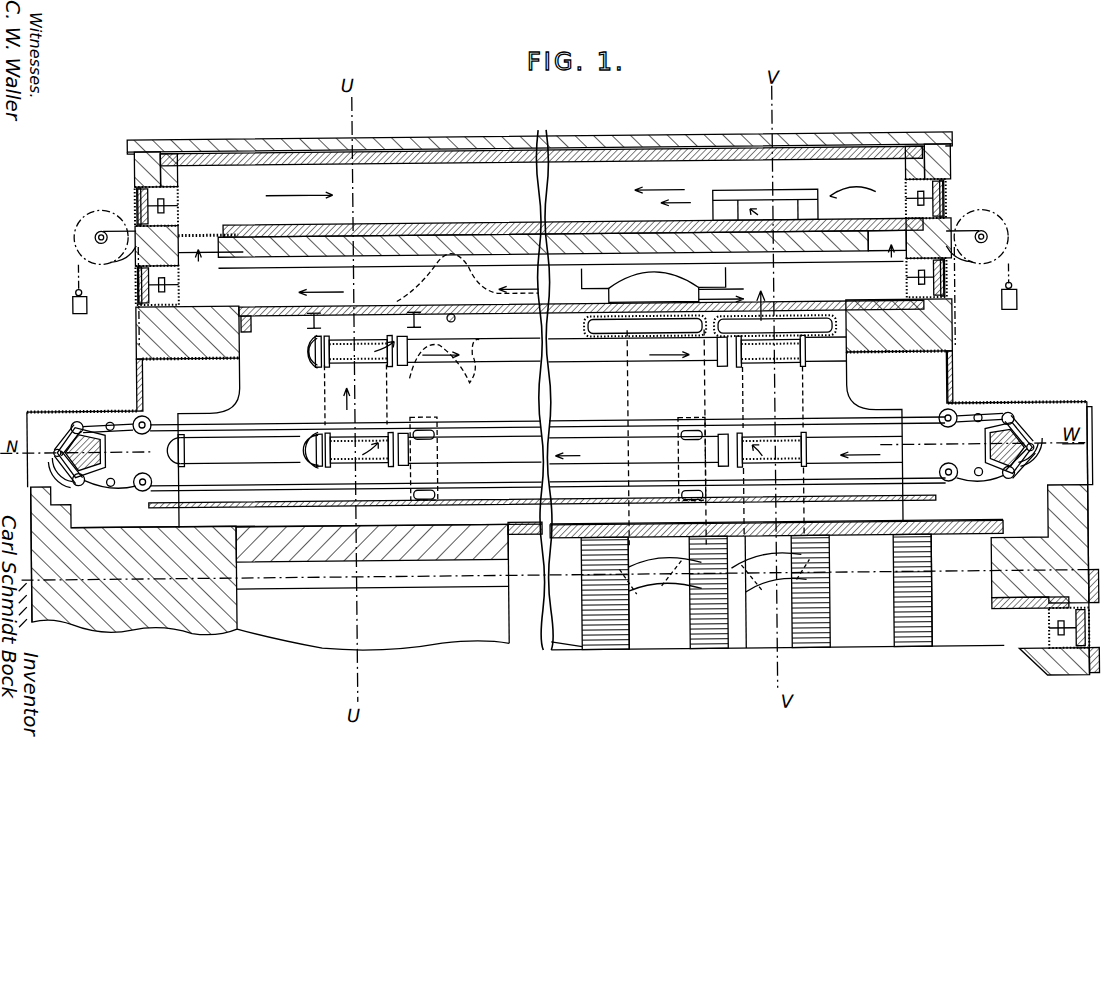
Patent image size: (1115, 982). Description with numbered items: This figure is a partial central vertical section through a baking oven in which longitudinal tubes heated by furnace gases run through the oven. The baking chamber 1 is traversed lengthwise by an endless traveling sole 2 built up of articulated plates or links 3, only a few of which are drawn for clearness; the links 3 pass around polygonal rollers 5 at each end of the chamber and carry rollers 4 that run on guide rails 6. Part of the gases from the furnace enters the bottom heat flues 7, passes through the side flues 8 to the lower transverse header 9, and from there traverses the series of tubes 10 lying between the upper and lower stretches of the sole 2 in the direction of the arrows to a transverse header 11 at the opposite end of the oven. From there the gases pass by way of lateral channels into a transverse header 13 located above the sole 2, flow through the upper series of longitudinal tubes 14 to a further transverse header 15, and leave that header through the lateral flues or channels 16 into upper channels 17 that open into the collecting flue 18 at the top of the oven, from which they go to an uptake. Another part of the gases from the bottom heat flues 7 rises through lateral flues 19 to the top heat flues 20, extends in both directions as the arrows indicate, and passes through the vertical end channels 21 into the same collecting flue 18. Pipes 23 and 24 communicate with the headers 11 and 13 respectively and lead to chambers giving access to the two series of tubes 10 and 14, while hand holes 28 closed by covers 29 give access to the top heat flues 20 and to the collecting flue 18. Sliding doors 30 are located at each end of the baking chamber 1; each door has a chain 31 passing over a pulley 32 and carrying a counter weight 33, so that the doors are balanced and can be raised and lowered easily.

The baking chamber 1 is at (556, 408).
The endless traveling sole 2 is at (92, 419).
The articulated plates or links 3 is at (66, 432).
The rollers 4 is at (147, 416).
The polygonal rollers 5 is at (95, 450).
The guide rails 6 is at (250, 423).
The bottom heat flues 7 is at (756, 591).
The side flues 8 is at (798, 514).
The lower transverse header 9 is at (798, 454).
The tubes 10 is at (490, 445).
The transverse header 11 is at (352, 453).
The transverse header 13 is at (342, 354).
The longitudinal tubes 14 is at (586, 352).
The transverse header 15 is at (795, 352).
The lateral flues or channels 16 is at (798, 285).
The upper channels 17 is at (792, 212).
The collecting flue 18 is at (571, 196).
The lateral flues 19 is at (638, 512).
The top heat flues 20 is at (418, 278).
The vertical end channels 21 is at (205, 250).
The pipes 23 is at (258, 347).
The pipes 24 is at (268, 456).
The hand holes 28 is at (172, 202).
The covers 29 is at (140, 202).
The sliding doors 30 is at (137, 369).
The chains 31 is at (137, 271).
The pulleys 32 is at (95, 223).
The counter weights 33 is at (74, 300).